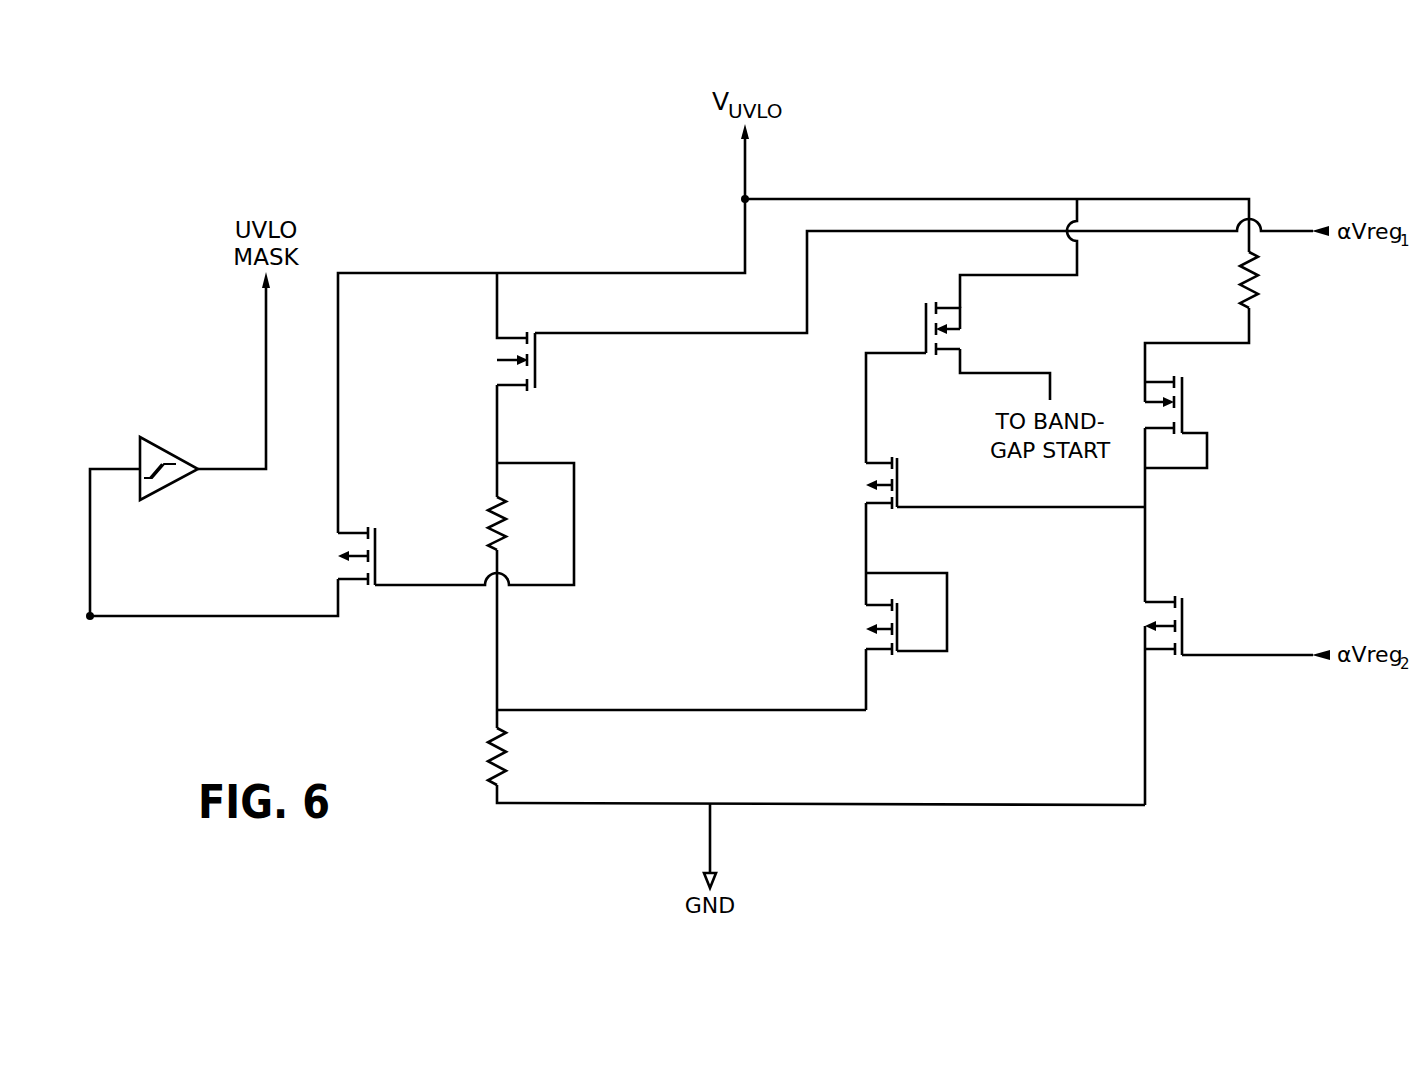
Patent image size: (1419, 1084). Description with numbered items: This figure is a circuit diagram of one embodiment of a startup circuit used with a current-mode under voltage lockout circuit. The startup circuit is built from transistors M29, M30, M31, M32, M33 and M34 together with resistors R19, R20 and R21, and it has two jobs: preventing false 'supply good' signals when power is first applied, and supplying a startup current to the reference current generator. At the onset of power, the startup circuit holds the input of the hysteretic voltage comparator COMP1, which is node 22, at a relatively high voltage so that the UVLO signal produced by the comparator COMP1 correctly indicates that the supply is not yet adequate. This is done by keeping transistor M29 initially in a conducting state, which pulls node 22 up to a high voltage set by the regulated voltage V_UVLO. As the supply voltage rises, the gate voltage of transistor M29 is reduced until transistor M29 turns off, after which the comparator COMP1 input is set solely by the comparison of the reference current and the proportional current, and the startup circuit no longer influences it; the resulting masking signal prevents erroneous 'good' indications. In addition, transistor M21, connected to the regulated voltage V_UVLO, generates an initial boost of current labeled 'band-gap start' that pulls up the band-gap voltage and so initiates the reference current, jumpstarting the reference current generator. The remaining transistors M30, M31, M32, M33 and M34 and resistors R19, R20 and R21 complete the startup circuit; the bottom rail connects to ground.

The node 22 is at (90, 620).
The hysteretic voltage comparator COMP1 is at (172, 450).
The transistor M29 is at (327, 556).
The transistor M30 is at (484, 332).
The transistor M21 is at (913, 328).
The transistor M31 is at (849, 483).
The transistor M32 is at (849, 627).
The transistor M33 is at (1195, 405).
The transistor M34 is at (1194, 625).
The resistor R19 is at (523, 756).
The resistor R20 is at (1274, 280).
The resistor R21 is at (523, 523).